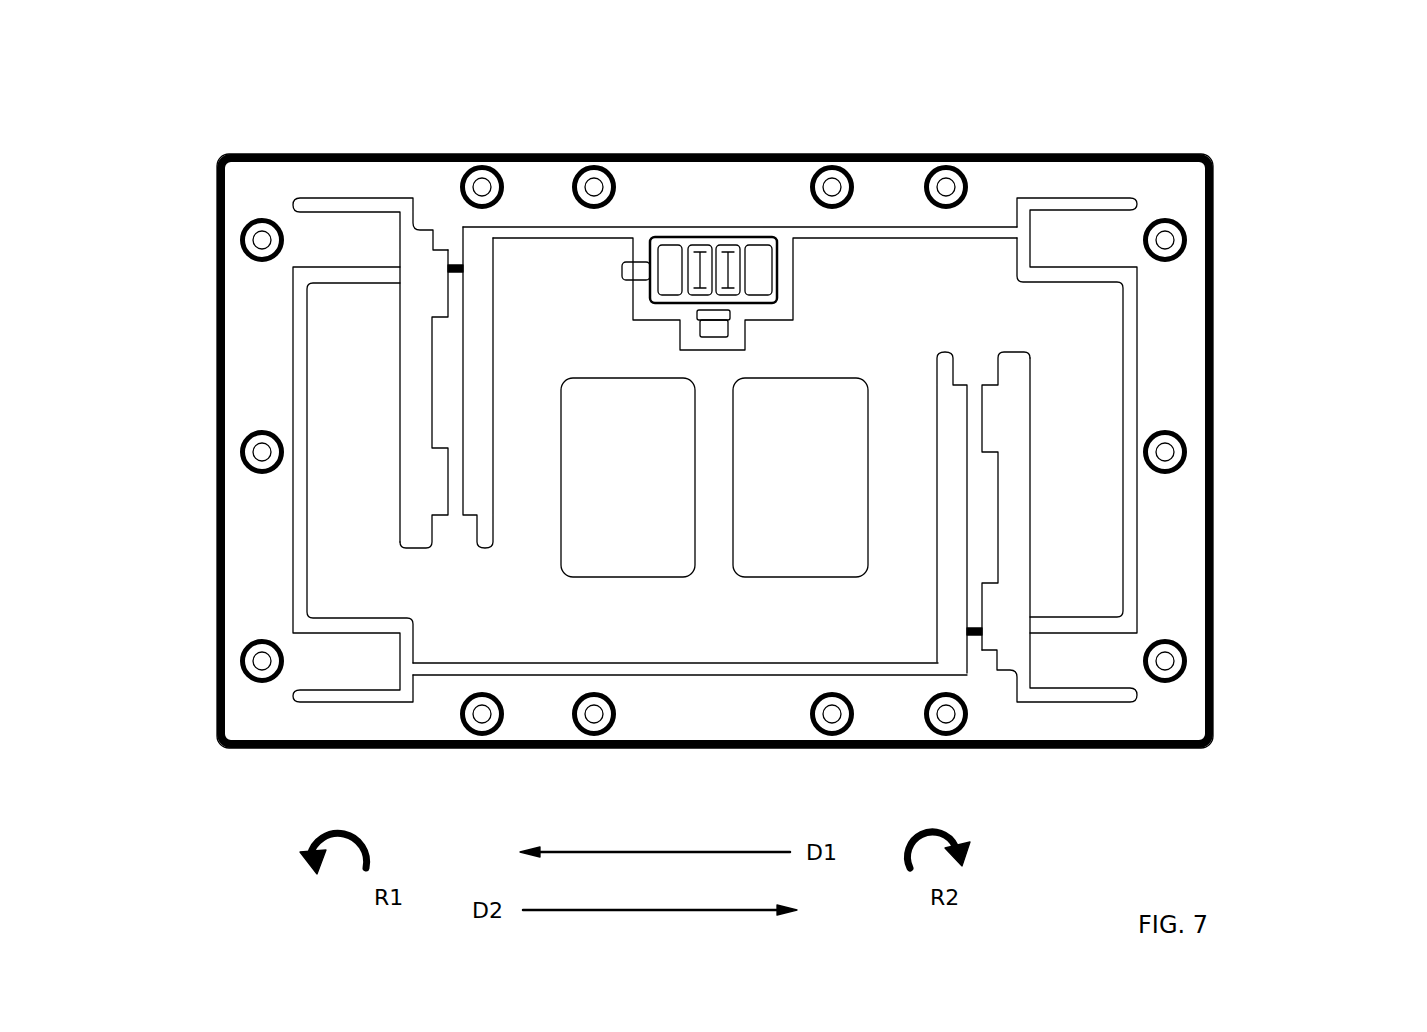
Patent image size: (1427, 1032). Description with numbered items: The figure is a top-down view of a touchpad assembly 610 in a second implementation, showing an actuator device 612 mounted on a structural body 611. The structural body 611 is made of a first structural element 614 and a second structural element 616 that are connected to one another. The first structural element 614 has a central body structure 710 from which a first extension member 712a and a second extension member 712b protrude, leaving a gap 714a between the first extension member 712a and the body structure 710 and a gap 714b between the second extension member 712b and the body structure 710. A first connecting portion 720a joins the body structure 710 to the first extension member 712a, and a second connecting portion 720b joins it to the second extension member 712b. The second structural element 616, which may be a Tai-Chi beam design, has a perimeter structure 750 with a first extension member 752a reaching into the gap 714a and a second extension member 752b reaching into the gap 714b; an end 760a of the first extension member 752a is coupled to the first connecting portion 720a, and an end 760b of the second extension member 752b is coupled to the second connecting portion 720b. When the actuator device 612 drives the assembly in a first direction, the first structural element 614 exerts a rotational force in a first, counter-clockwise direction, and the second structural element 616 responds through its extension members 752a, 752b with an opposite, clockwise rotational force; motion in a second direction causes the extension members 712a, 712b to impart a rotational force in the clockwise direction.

The touchpad assembly 610 is at (1274, 42).
The structural body 611 is at (1278, 171).
The actuator device 612 is at (765, 230).
The first structural element 614 is at (904, 247).
The second structural element 616 is at (680, 165).
The body structure 710 is at (714, 509).
The first extension member 712a is at (311, 365).
The second extension member 712b is at (1107, 378).
The gap 714a is at (394, 486).
The gap 714b is at (1022, 521).
The first connecting portion 720a is at (384, 586).
The second connecting portion 720b is at (1022, 294).
The perimeter structure 750 is at (422, 167).
The first extension member 752a is at (433, 339).
The second extension member 752b is at (994, 472).
The end 760a is at (436, 537).
The end 760b is at (986, 354).